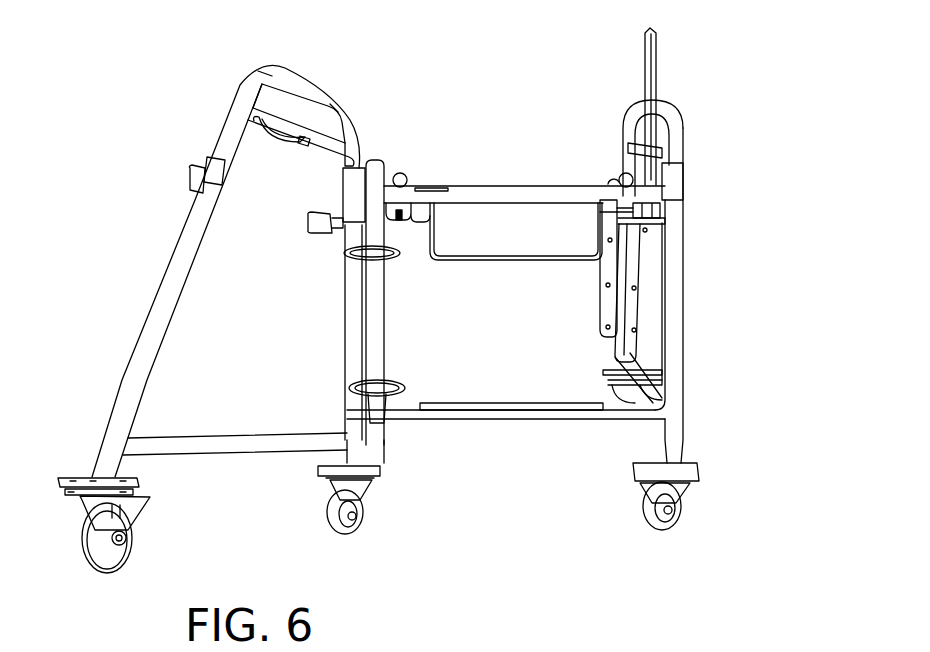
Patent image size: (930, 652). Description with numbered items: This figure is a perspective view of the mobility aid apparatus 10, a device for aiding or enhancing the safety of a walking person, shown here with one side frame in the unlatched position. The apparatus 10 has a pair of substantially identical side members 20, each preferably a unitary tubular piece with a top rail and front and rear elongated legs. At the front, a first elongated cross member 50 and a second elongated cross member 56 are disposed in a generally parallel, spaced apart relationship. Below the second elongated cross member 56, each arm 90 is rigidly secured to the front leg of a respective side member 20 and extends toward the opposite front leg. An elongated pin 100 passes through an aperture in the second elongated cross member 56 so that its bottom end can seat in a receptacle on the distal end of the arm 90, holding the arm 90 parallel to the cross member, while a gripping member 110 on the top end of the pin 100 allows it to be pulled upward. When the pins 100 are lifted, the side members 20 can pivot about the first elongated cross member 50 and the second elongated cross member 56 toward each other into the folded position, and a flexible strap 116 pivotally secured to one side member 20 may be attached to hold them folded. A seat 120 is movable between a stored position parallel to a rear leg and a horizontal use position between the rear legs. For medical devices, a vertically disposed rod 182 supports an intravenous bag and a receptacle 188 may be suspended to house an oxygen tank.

The mobility aid apparatus 10 is at (727, 206).
The side member 20 is at (225, 96).
The first elongated cross member 50 is at (498, 420).
The second elongated cross member 56 is at (500, 188).
The arm 90 is at (327, 233).
The elongated pin 100 is at (400, 222).
The gripping member 110 is at (404, 175).
The flexible strap 116 is at (275, 130).
The seat 120 is at (594, 283).
The vertically disposed rod 182 is at (645, 58).
The receptacle 188 is at (378, 285).